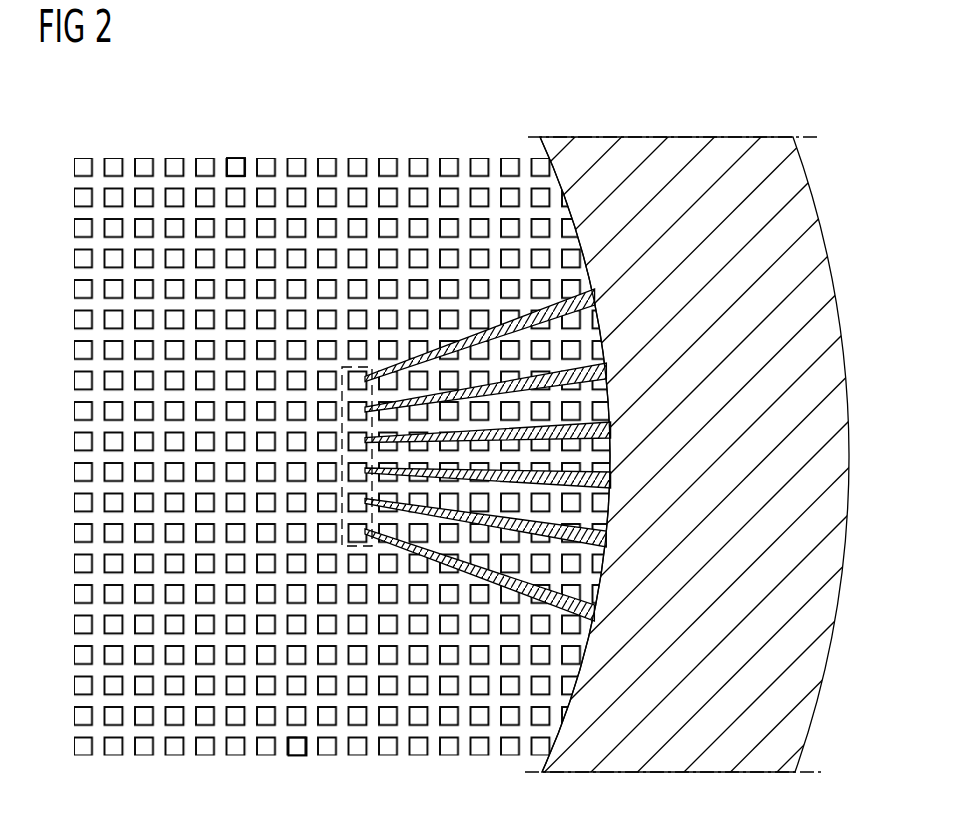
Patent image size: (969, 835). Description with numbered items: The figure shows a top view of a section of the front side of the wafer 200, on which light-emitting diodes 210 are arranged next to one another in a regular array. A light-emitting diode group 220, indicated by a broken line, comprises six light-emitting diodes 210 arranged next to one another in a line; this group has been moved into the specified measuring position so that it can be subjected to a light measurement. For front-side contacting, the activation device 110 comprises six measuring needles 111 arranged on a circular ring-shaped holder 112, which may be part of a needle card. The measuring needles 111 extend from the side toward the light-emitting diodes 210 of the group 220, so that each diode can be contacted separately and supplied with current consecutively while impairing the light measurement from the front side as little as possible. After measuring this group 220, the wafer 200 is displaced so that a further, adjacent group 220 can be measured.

The wafer 200 is at (172, 113).
The light-emitting diode 210 is at (238, 160).
The light-emitting diode group 220 is at (342, 441).
The activation device 110 is at (647, 102).
The measuring needle 111 is at (433, 343).
The circular ring-shaped holder 112 is at (587, 146).